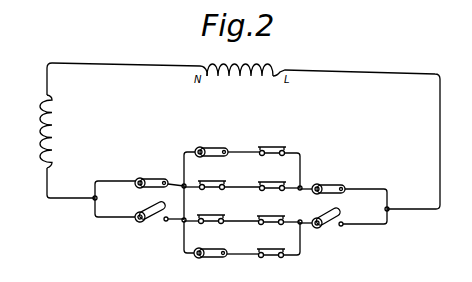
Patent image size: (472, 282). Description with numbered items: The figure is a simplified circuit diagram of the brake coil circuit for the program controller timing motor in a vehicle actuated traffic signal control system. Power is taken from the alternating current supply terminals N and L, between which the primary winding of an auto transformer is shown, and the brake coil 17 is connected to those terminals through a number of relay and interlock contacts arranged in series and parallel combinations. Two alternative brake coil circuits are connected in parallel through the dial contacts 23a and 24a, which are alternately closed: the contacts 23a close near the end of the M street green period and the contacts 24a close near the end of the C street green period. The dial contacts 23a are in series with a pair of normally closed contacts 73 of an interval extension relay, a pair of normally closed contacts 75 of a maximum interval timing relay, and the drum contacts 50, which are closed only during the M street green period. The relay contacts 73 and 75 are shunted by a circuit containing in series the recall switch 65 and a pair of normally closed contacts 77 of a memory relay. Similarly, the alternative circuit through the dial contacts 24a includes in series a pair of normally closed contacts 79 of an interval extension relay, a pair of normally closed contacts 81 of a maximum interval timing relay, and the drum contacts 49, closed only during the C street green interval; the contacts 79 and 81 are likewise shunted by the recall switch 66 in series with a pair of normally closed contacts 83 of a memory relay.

The brake coil 17 is at (57, 136).
The dial contacts 23a is at (155, 180).
The dial contacts 24a is at (150, 213).
The recall switch 65 is at (209, 149).
The recall switch 66 is at (209, 250).
The normally closed contacts of interval extension relay 73 is at (209, 180).
The normally closed contacts of maximum interval timing relay 75 is at (268, 181).
The normally closed contacts of memory relay 77 is at (264, 148).
The normally closed contacts of interval extension relay 79 is at (213, 215).
The normally closed contacts of maximum interval timing relay 81 is at (272, 215).
The normally closed contacts of memory relay 83 is at (268, 249).
The drum contacts 50 is at (333, 186).
The drum contacts 49 is at (344, 220).